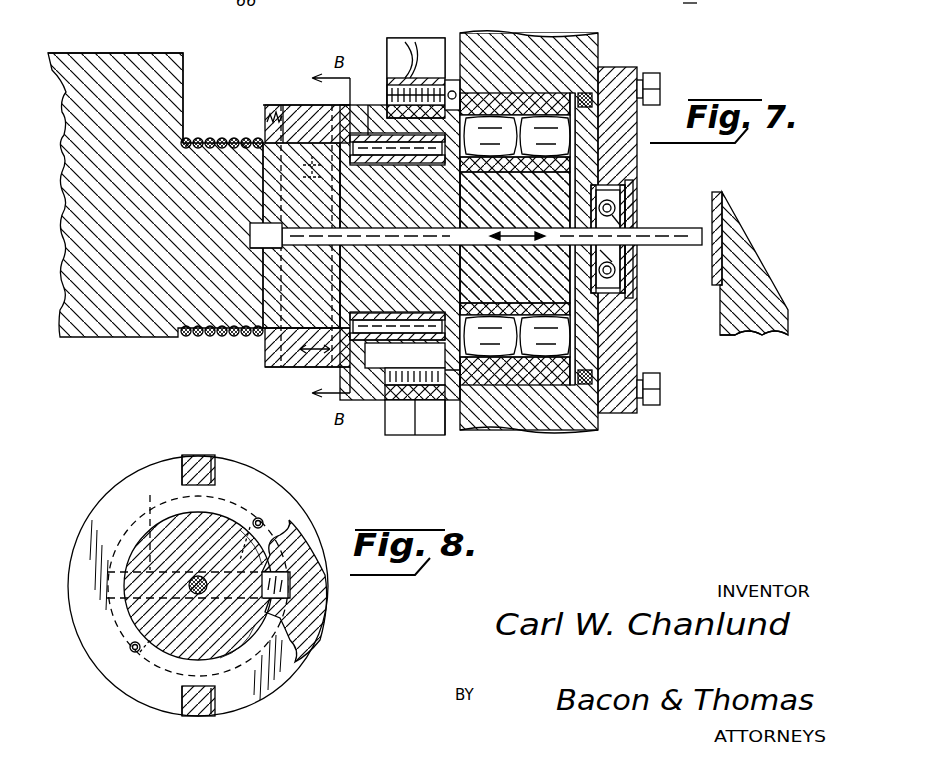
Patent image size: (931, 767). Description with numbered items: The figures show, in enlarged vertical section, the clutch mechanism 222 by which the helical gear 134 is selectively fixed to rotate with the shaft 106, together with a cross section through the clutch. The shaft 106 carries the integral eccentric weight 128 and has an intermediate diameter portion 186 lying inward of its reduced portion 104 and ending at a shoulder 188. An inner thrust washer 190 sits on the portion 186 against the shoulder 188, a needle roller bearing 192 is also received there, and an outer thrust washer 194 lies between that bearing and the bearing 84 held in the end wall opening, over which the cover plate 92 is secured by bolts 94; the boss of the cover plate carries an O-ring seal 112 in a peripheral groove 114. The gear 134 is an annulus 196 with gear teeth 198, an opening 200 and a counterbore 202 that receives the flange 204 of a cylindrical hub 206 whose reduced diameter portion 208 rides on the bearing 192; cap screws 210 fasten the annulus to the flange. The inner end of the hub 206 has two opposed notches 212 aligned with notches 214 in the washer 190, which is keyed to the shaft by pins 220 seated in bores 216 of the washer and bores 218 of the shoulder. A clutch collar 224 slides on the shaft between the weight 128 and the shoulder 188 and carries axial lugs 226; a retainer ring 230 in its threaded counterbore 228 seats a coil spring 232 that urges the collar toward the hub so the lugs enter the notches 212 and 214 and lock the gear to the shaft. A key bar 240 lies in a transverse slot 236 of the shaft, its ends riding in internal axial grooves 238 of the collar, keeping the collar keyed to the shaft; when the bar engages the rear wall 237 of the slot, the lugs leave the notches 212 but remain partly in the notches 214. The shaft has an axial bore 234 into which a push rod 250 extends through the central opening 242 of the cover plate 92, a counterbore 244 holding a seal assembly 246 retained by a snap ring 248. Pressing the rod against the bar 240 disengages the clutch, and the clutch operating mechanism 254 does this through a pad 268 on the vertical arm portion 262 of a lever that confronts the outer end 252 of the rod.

In FIG. 7, the bearing 84 is at (548, 105).
In FIG. 7, the cover plate 92 is at (637, 146).
In FIG. 7, the bolts 94 is at (660, 88).
In FIG. 7, the reduced portion 104 is at (530, 170).
In FIG. 7, the shaft 106 is at (209, 150).
In FIG. 7, the O-ring seal 112 is at (582, 425).
In FIG. 7, the peripheral groove 114 is at (600, 378).
In FIG. 7, the eccentric weight 128 is at (152, 62).
In FIG. 7, the gear 134 is at (445, 438).
In FIG. 7, the intermediate diameter portion 186 is at (407, 166).
In FIG. 7, the shoulder 188 is at (334, 294).
In FIG. 7, the inner thrust washer 190 is at (347, 312).
In FIG. 8, the inner thrust washer 190 is at (290, 517).
In FIG. 7, the needle roller bearing 192 is at (374, 174).
In FIG. 7, the outer thrust washer 194 is at (447, 310).
In FIG. 7, the annulus 196 is at (388, 62).
In FIG. 7, the gear teeth 198 is at (400, 42).
In FIG. 7, the opening 200 is at (426, 358).
In FIG. 7, the counterbore 202 is at (416, 82).
In FIG. 7, the flange 204 is at (392, 88).
In FIG. 7, the hub 206 is at (373, 370).
In FIG. 7, the reduced diameter portion 208 is at (463, 124).
In FIG. 7, the cap screws 210 is at (463, 88).
In FIG. 7, the notches 212 is at (406, 107).
In FIG. 7, the notches 214 is at (322, 375).
In FIG. 8, the notches 214 is at (210, 457).
In FIG. 8, the bores 216 is at (261, 518).
In FIG. 7, the bores 218 is at (314, 188).
In FIG. 7, the pins 220 is at (330, 166).
In FIG. 8, the pins 220 is at (256, 516).
In FIG. 7, the clutch mechanism 222 is at (273, 88).
In FIG. 7, the clutch collar 224 is at (272, 370).
In FIG. 8, the clutch collar 224 is at (320, 548).
In FIG. 7, the lugs 226 is at (348, 100).
In FIG. 8, the lugs 226 is at (193, 458).
In FIG. 7, the threaded counterbore 228 is at (268, 122).
In FIG. 7, the retainer ring 230 is at (266, 345).
In FIG. 7, the coil spring 232 is at (212, 340).
In FIG. 7, the axial bore 234 is at (485, 228).
In FIG. 7, the transverse slot 236 is at (265, 328).
In FIG. 8, the transverse slot 236 is at (150, 512).
In FIG. 7, the rear wall 237 is at (252, 255).
In FIG. 8, the internal axial grooves 238 is at (288, 586).
In FIG. 7, the key bar 240 is at (282, 224).
In FIG. 8, the key bar 240 is at (262, 573).
In FIG. 7, the central opening 242 is at (492, 237).
In FIG. 7, the counterbore 244 is at (611, 186).
In FIG. 7, the seal assembly 246 is at (630, 206).
In FIG. 7, the snap ring 248 is at (632, 286).
In FIG. 7, the push rod 250 is at (480, 246).
In FIG. 7, the outer end 252 is at (700, 248).
In FIG. 7, the clutch operating mechanism 254 is at (772, 260).
In FIG. 7, the vertical arm portion 262 is at (780, 337).
In FIG. 7, the pad 268 is at (714, 192).